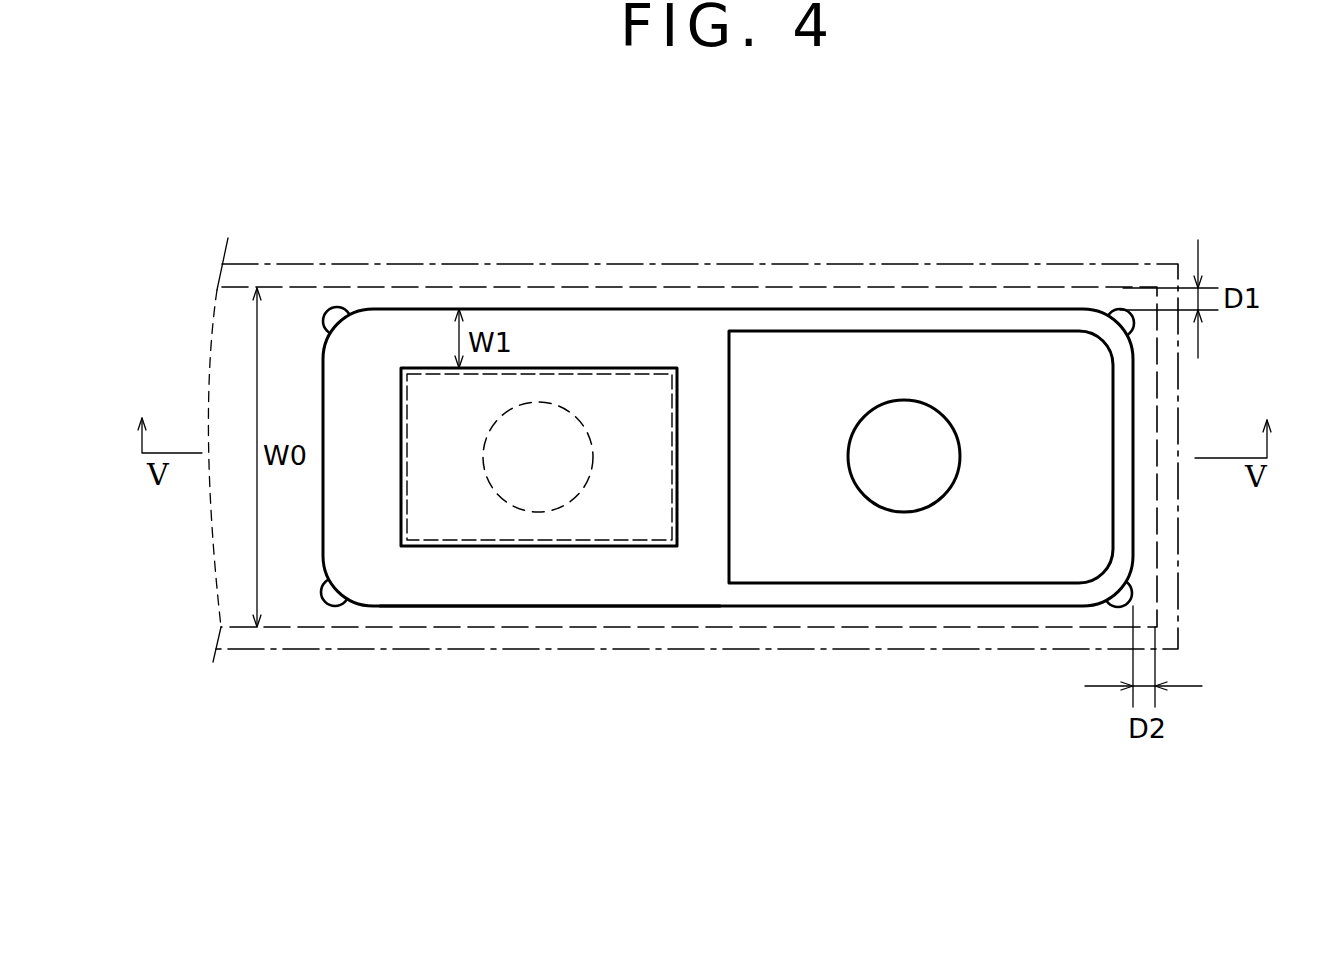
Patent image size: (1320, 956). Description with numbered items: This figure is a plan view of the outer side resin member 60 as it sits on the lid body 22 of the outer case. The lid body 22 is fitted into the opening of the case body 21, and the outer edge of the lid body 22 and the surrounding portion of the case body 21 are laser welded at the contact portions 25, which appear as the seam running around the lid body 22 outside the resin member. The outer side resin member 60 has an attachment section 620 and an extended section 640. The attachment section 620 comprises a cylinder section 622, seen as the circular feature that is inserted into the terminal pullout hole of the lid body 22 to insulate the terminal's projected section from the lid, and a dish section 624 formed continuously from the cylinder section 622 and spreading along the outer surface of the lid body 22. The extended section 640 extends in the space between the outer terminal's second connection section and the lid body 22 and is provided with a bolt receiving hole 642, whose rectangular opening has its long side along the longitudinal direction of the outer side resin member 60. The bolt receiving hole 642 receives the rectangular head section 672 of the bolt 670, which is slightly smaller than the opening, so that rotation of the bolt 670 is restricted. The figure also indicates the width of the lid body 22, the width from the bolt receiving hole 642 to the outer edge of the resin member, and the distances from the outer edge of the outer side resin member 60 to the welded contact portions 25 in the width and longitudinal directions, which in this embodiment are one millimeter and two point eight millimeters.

The case body 21 is at (271, 280).
The lid body 22 is at (298, 305).
The contact portions 25 is at (495, 287).
The outer side resin member 60 is at (727, 445).
The attachment section 620 is at (1013, 608).
The cylinder section 622 is at (852, 467).
The dish section 624 is at (1028, 357).
The extended section 640 is at (505, 605).
The bolt receiving hole 642 is at (672, 513).
The bolt 670 is at (447, 542).
The head section 672 is at (630, 406).